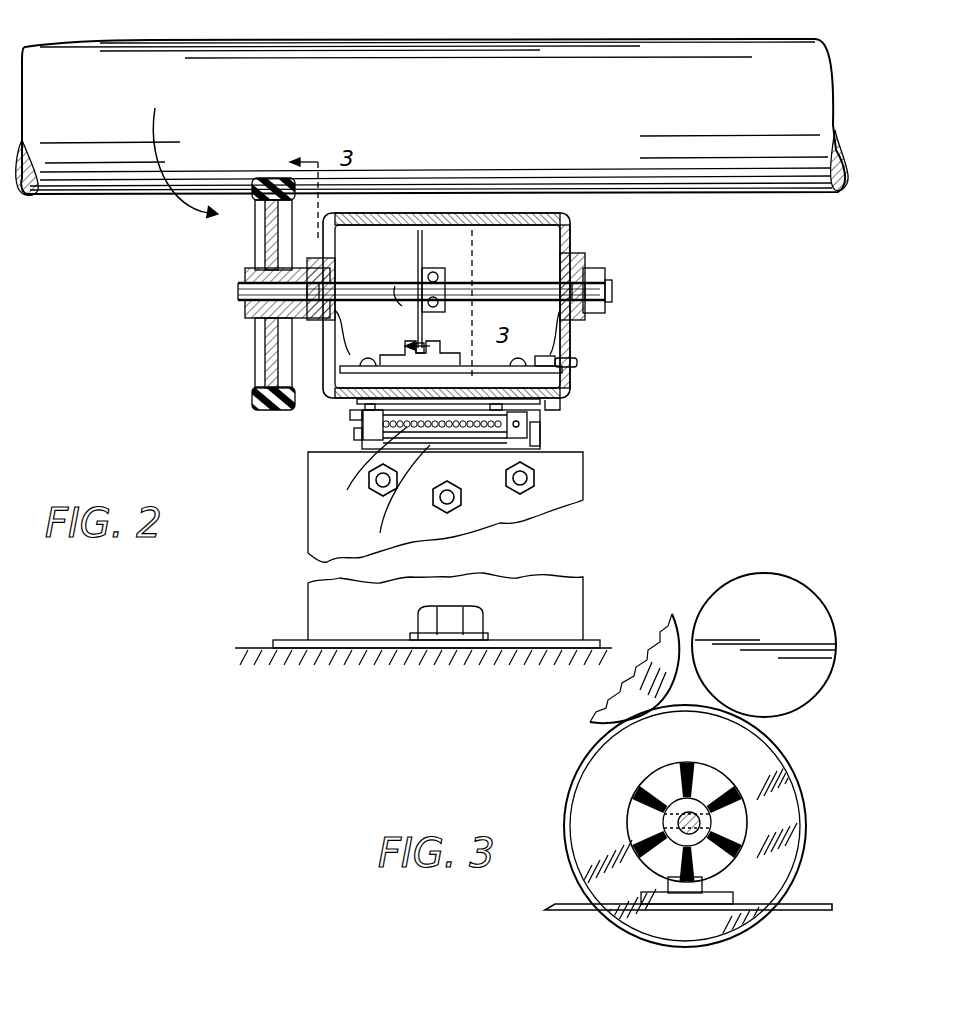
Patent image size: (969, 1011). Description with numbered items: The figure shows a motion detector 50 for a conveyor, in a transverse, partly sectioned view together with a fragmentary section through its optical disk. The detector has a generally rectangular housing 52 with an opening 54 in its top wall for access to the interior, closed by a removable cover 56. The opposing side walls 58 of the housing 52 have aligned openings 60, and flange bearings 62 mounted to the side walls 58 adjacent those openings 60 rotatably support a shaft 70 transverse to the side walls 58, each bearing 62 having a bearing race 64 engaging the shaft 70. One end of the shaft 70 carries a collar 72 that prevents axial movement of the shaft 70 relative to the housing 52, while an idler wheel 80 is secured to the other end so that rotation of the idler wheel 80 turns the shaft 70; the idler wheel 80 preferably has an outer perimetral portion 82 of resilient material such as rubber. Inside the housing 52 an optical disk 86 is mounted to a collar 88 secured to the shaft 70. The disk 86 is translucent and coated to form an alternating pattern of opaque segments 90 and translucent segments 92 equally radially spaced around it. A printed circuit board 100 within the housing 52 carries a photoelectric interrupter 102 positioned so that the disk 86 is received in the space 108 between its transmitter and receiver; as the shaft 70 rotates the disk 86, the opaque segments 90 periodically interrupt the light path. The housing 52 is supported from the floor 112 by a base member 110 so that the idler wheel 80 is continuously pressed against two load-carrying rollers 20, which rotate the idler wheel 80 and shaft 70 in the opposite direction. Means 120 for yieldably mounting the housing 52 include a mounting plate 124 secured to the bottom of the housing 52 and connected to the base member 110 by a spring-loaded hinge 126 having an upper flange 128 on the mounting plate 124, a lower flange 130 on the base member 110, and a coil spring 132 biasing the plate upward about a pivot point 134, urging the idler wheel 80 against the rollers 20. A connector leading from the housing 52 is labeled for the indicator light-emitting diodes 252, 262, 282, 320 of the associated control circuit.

In FIG. 2, the load-carrying roller 20 is at (474, 72).
In FIG. 3, the load-carrying roller 20 is at (600, 702).
In FIG. 2, the motion detector 50 is at (666, 262).
In FIG. 2, the housing 52 is at (582, 347).
In FIG. 2, the opening 54 is at (547, 222).
In FIG. 2, the removable cover 56 is at (420, 212).
In FIG. 2, the side wall 58 is at (570, 336).
In FIG. 2, the opening 60 is at (556, 315).
In FIG. 2, the flange bearing 62 is at (320, 278).
In FIG. 2, the bearing race 64 is at (305, 262).
In FIG. 2, the shaft 70 is at (240, 290).
In FIG. 3, the shaft 70 is at (683, 838).
In FIG. 2, the collar 72 is at (597, 280).
In FIG. 2, the idler wheel 80 is at (258, 375).
In FIG. 3, the idler wheel 80 is at (798, 786).
In FIG. 2, the outer perimetral portion 82 is at (268, 178).
In FIG. 2, the optical disk 86 is at (417, 253).
In FIG. 3, the optical disk 86 is at (725, 776).
In FIG. 2, the collar 88 is at (435, 268).
In FIG. 3, the collar 88 is at (715, 850).
In FIG. 3, the opaque segment 90 is at (700, 775).
In FIG. 3, the translucent segment 92 is at (662, 778).
In FIG. 2, the printed circuit board 100 is at (494, 376).
In FIG. 3, the printed circuit board 100 is at (565, 905).
In FIG. 2, the photoelectric interrupter 102 is at (400, 362).
In FIG. 3, the photoelectric interrupter 102 is at (735, 898).
In FIG. 2, the space 108 is at (422, 345).
In FIG. 2, the base member 110 is at (586, 500).
In FIG. 2, the floor 112 is at (265, 647).
In FIG. 2, the means for yieldably mounting 120 is at (566, 430).
In FIG. 2, the mounting plate 124 is at (570, 402).
In FIG. 2, the spring-loaded hinge 126 is at (530, 445).
In FIG. 2, the upper flange 128 is at (350, 417).
In FIG. 2, the lower flange 130 is at (387, 499).
In FIG. 2, the coil spring 132 is at (362, 472).
In FIG. 2, the pivot point 134 is at (354, 437).
In FIG. 2, the light-emitting diode 252 is at (572, 362).
In FIG. 2, the light-emitting diode 262 is at (715, 381).
In FIG. 2, the light-emitting diode 282 is at (758, 381).
In FIG. 2, the light-emitting diode 320 is at (805, 381).